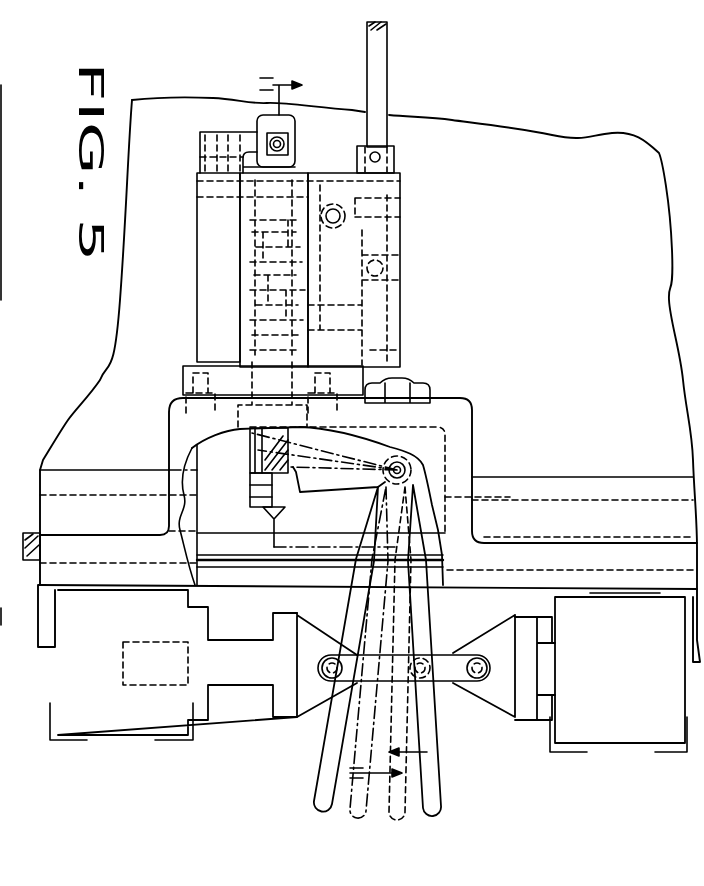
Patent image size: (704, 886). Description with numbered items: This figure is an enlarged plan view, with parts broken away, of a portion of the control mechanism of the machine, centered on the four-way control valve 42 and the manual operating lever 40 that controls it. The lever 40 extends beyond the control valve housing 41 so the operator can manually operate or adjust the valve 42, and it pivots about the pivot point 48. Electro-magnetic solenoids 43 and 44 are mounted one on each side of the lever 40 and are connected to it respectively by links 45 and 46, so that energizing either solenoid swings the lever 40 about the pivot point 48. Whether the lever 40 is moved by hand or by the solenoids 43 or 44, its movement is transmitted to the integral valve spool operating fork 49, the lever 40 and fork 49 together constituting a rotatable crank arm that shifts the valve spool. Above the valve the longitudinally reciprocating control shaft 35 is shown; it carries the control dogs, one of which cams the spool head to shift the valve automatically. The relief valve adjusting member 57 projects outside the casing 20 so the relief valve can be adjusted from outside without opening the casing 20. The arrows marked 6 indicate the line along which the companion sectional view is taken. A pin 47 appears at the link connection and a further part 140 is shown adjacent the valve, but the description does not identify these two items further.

The casing 20 is at (568, 572).
The control shaft 35 is at (250, 568).
The manual operating lever 40 is at (319, 774).
The control valve housing 41 is at (262, 510).
The four-way control valve 42 is at (249, 486).
The electro-magnetic solenoid 43 is at (173, 665).
The electro-magnetic solenoid 44 is at (601, 674).
The link 45 is at (356, 652).
The link 46 is at (447, 681).
The pivot pin 47 is at (426, 657).
The pivot point 48 is at (407, 466).
The valve spool operating fork 49 is at (318, 484).
The relief valve adjusting member 57 is at (387, 62).
The nozzle 140 is at (283, 491).
The section line 6- 6 is at (343, 435).